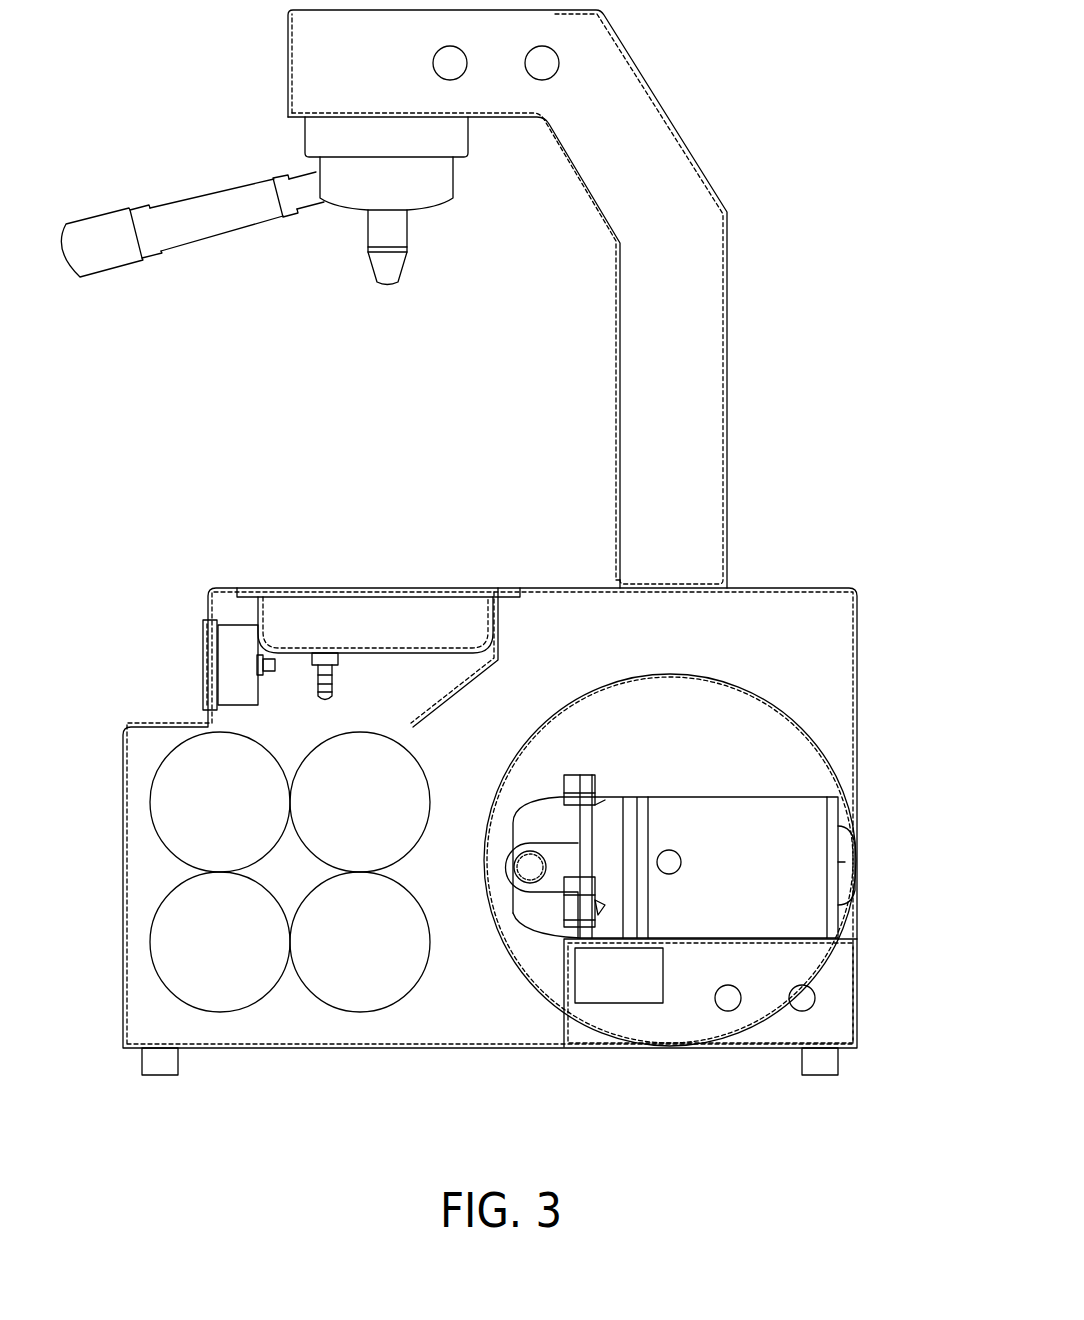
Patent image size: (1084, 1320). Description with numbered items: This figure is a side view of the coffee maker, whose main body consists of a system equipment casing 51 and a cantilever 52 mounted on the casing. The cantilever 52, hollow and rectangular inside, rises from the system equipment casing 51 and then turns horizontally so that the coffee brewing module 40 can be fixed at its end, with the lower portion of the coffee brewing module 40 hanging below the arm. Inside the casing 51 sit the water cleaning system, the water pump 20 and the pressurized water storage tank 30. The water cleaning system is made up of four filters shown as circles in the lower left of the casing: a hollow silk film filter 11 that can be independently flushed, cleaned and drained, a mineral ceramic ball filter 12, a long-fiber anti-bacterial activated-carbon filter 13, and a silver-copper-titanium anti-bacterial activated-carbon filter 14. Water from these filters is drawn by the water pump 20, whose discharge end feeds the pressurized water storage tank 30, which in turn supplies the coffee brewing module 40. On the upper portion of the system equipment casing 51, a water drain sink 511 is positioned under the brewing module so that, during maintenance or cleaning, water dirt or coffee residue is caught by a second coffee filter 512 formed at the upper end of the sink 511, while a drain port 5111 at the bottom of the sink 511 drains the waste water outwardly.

The hollow silk film filter 11 is at (237, 955).
The mineral ceramic ball filter 12 is at (237, 815).
The long-fiber anti-bacterial activated-carbon filter 13 is at (377, 815).
The silver-copper-titanium anti-bacterial activated-carbon filter 14 is at (377, 955).
The water pump 20 is at (785, 887).
The pressurized water storage tank 30 is at (782, 706).
The coffee brewing module 40 is at (348, 223).
The system equipment casing 51 is at (858, 735).
The water drain sink 511 is at (257, 612).
The drain port 5111 is at (320, 672).
The second coffee filter 512 is at (368, 590).
The cantilever 52 is at (729, 305).